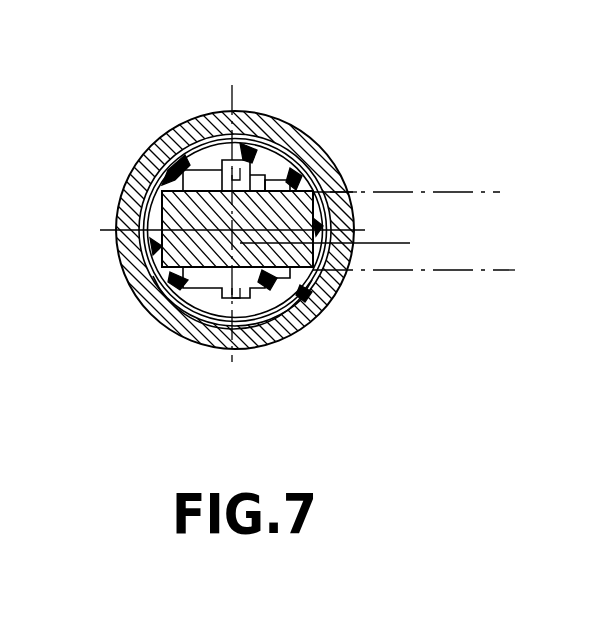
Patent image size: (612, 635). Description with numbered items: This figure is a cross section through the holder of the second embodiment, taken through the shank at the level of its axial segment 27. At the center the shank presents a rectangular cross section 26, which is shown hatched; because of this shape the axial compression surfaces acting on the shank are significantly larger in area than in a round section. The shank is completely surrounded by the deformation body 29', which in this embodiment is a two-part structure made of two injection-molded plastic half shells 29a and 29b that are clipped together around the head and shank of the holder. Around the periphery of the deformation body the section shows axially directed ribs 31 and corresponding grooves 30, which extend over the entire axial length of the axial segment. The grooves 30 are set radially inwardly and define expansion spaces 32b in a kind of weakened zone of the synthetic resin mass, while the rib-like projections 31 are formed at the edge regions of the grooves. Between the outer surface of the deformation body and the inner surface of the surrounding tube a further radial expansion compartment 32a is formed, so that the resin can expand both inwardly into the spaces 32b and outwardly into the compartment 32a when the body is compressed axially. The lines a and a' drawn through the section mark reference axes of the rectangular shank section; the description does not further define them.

The rectangular cross section 26 is at (206, 205).
The axial segment 27 is at (285, 183).
The half shell 29a is at (148, 285).
The half shell 29b is at (173, 168).
The deformation body 29' is at (272, 317).
The axial groove 30 is at (182, 181).
The rib-like projection 31 is at (196, 122).
The radial expansion compartment 32a is at (262, 178).
The expansion space 32b is at (251, 175).
The axis a is at (392, 178).
The axis a' is at (342, 244).